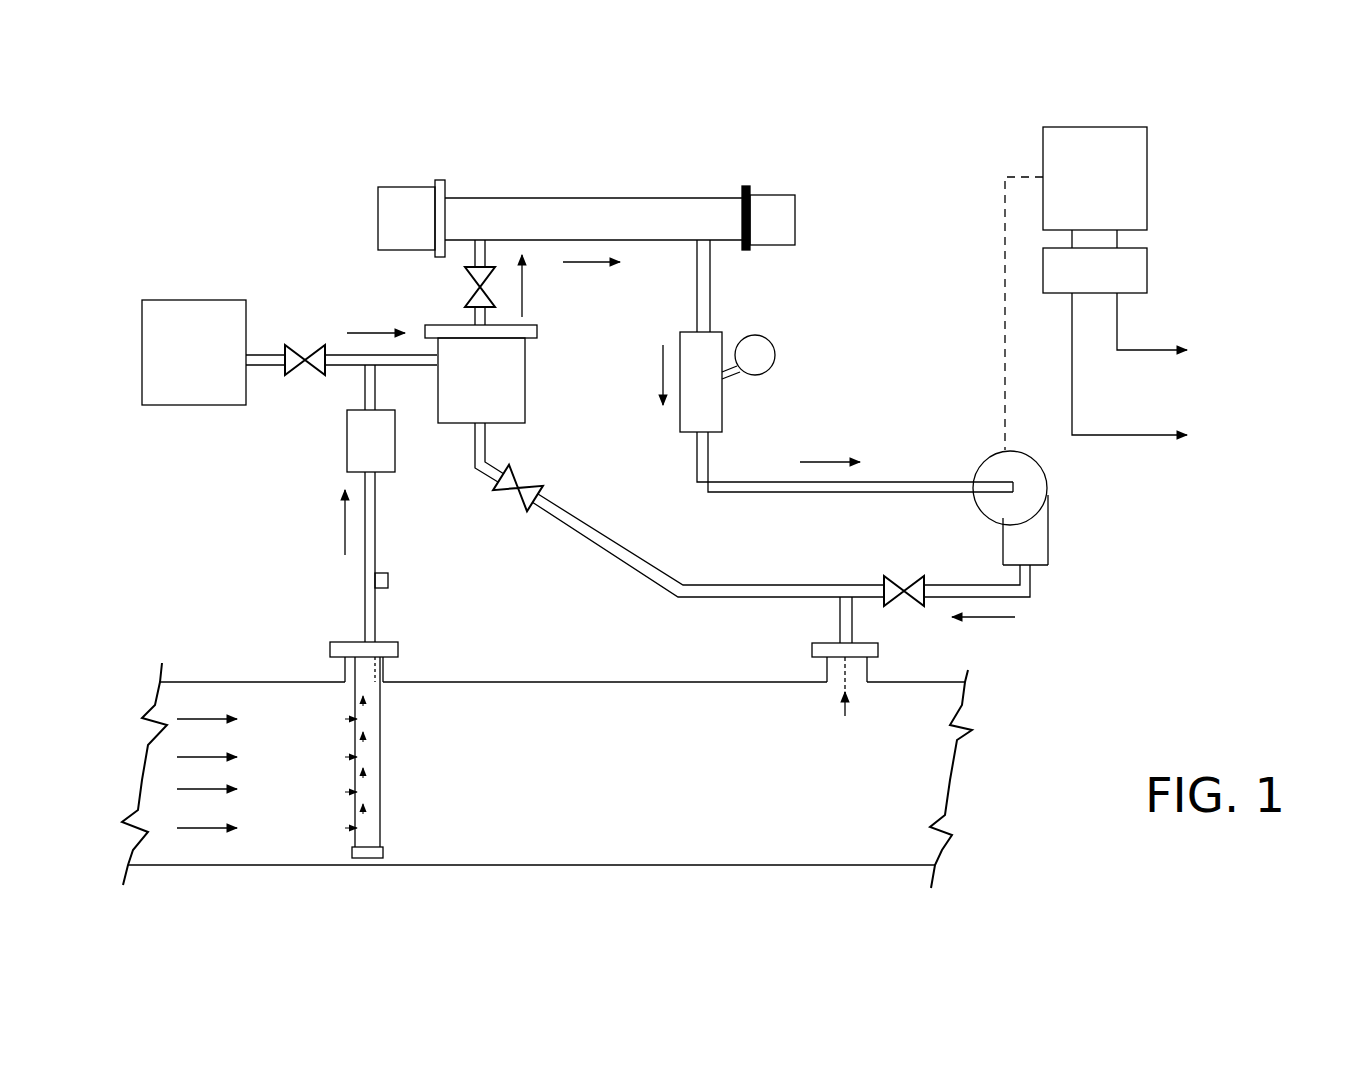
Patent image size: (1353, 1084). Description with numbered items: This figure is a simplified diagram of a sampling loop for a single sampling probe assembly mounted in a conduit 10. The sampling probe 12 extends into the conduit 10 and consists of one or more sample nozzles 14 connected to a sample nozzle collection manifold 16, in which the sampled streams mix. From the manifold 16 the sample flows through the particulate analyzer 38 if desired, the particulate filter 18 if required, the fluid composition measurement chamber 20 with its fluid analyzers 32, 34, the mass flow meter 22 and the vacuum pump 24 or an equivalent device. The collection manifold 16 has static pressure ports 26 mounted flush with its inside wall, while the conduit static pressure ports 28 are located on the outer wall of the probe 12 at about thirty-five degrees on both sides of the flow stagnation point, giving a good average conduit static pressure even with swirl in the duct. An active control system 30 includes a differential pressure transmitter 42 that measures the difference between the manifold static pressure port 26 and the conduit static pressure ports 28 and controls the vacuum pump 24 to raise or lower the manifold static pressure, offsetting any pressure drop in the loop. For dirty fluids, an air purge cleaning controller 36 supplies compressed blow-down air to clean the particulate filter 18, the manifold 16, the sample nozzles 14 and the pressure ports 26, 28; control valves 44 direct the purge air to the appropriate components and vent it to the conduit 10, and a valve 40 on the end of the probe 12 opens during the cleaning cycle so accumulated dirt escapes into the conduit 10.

The conduit 10 is at (645, 680).
The sampling probe 12 is at (382, 717).
The sample nozzles 14 is at (350, 718).
The sample nozzle collection manifold 16 is at (363, 562).
The particulate filter 18 is at (525, 380).
The fluid composition measurement chamber 20 is at (633, 198).
The mass flow meter 22 is at (770, 337).
The vacuum pump 24 is at (1047, 497).
The static pressure ports 26 is at (388, 580).
The conduit static pressure ports 28 is at (375, 628).
The active control system 30 is at (1147, 197).
The fluid analyzer 32 is at (795, 218).
The fluid analyzer 34 is at (378, 222).
The air purge cleaning controller 36 is at (185, 405).
The particulate analyzer 38 is at (345, 440).
The valve 40 is at (383, 850).
The differential pressure transmitter 42 is at (1147, 273).
The control valves 44 is at (305, 348).